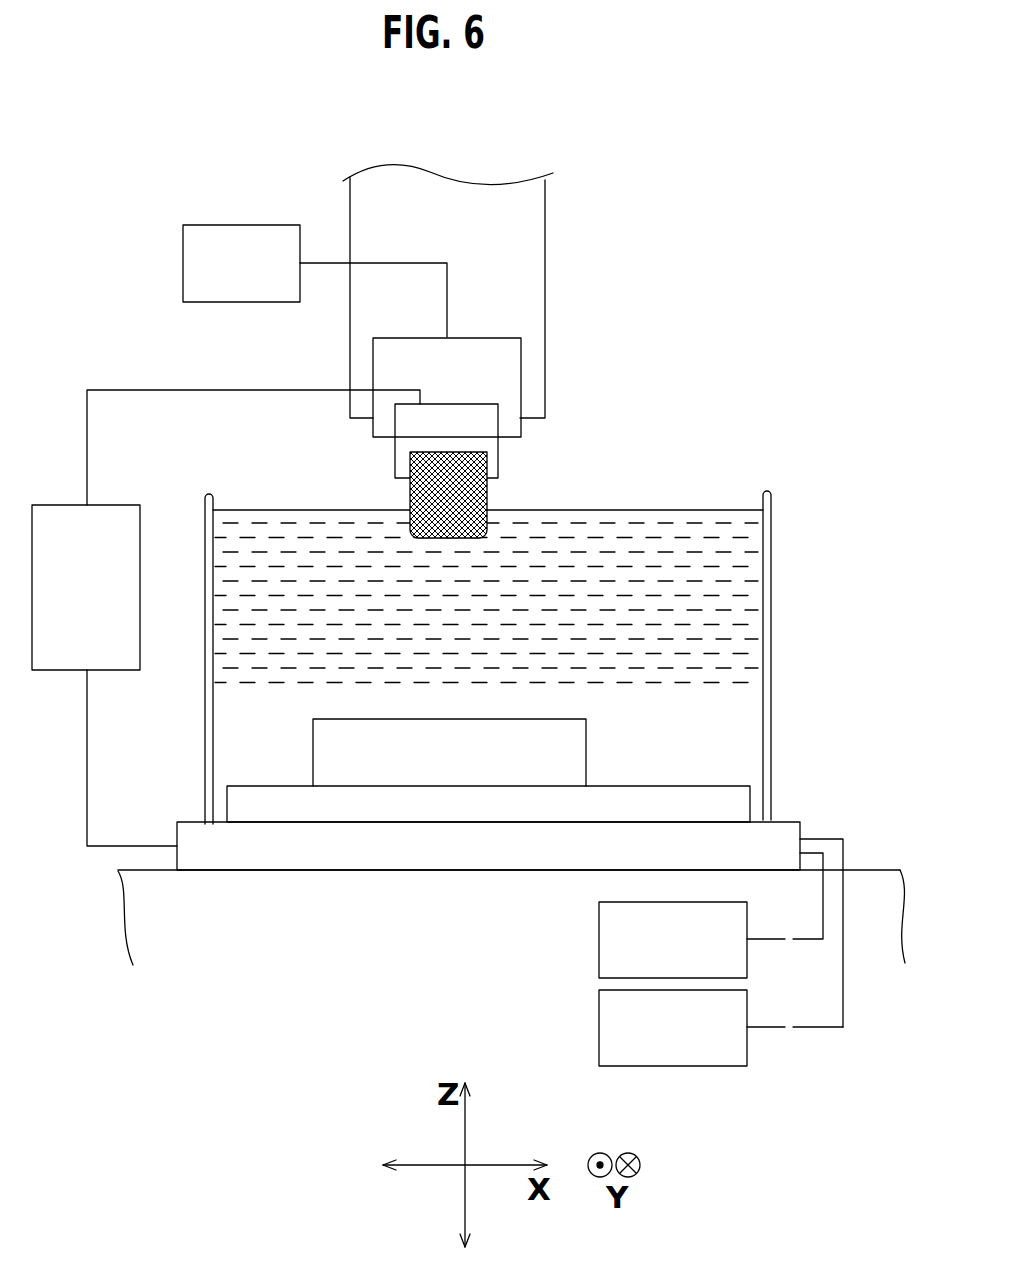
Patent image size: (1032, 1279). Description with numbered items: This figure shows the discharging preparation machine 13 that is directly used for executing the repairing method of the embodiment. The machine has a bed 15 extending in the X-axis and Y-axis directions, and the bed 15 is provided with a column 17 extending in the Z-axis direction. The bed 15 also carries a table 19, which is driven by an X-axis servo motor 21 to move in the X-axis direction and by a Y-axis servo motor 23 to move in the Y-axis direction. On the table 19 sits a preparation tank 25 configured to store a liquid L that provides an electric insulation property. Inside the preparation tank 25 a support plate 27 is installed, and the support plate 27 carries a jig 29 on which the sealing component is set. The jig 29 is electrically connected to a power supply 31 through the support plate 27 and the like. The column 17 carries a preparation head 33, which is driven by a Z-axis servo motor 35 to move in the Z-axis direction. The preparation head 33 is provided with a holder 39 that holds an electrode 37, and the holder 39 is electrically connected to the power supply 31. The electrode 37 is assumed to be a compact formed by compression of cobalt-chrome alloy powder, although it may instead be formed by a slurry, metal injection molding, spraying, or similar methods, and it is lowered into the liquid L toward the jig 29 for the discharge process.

The discharging preparation machine 13 is at (723, 209).
The bed 15 is at (878, 868).
The column 17 is at (545, 290).
The table 19 is at (305, 860).
The X-axis servo motor 21 is at (599, 940).
The Y-axis servo motor 23 is at (599, 1030).
The preparation tank 25 is at (771, 698).
The support plate 27 is at (736, 800).
The jig 29 is at (586, 742).
The power supply 31 is at (118, 505).
The preparation head 33 is at (521, 376).
The Z-axis servo motor 35 is at (243, 225).
The electrode 37 is at (487, 493).
The holder 39 is at (498, 455).
The liquid L is at (733, 600).